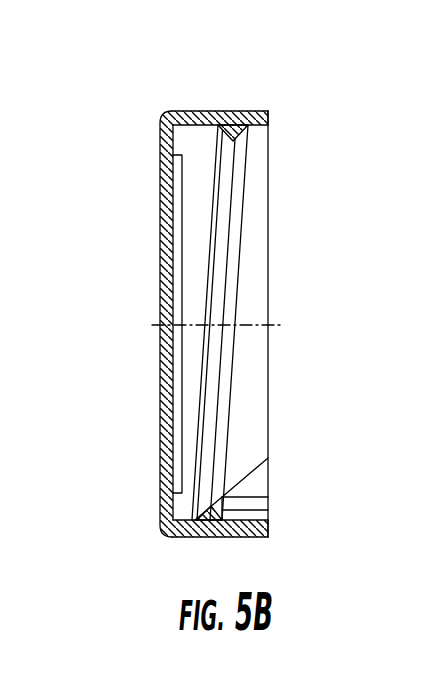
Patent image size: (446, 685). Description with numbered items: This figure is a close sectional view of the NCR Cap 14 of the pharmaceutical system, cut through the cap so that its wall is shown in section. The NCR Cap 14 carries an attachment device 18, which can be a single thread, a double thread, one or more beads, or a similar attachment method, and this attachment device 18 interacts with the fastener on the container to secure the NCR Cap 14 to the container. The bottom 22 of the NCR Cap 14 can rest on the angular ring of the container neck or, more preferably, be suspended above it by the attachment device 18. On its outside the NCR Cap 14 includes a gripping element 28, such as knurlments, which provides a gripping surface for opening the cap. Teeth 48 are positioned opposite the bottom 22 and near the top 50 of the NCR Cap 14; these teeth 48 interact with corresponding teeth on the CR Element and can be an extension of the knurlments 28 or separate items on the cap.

The NCR Cap 14 is at (97, 136).
The teeth 48 is at (167, 111).
The gripping element 28 is at (241, 111).
The bottom 22 is at (269, 115).
The attachment device 18 is at (232, 250).
The top 50 is at (160, 270).